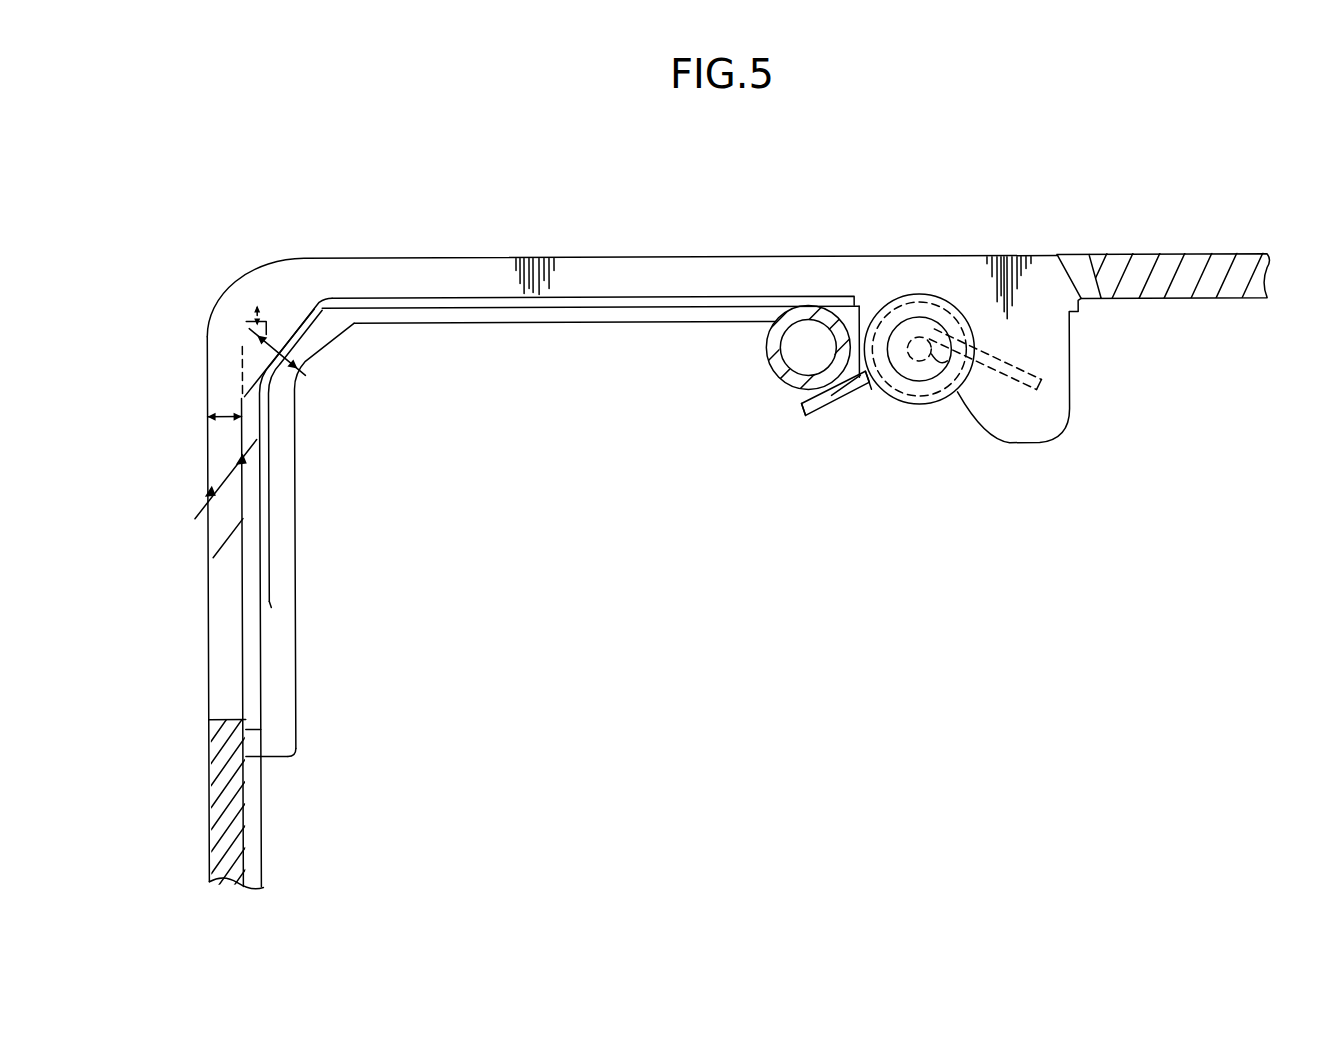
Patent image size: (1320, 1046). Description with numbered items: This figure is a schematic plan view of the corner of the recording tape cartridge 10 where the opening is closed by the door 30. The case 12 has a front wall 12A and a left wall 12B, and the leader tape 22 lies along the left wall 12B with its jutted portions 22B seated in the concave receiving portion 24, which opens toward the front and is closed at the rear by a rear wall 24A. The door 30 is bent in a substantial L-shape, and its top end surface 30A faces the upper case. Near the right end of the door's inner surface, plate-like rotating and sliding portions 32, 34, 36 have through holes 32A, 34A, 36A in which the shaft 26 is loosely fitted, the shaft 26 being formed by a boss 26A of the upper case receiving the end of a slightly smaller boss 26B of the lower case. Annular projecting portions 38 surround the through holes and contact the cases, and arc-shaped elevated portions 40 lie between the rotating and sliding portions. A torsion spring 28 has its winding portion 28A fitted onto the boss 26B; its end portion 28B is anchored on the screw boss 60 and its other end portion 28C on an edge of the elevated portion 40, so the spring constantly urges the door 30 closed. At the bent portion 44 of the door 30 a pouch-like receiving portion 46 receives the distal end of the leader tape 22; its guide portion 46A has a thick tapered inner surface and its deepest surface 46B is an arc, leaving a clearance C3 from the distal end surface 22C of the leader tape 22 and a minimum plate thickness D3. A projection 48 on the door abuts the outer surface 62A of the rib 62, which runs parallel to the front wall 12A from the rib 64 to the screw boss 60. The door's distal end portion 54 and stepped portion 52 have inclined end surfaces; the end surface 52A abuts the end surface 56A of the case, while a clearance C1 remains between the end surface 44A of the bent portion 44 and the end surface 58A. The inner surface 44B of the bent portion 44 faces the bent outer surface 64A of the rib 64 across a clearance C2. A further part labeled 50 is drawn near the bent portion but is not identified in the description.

The recording tape cartridge 10 is at (1160, 174).
The case 12 is at (1180, 235).
The front wall 12A is at (1150, 256).
The left wall 12B is at (208, 797).
The leader tape 22 is at (263, 608).
The jutted portions 22B is at (260, 663).
The distal end surface 22C is at (248, 330).
The concave receiving portion 24 is at (271, 600).
The rear wall 24A is at (270, 755).
The shaft 26 is at (979, 300).
The cylindrical boss 26A is at (979, 300).
The cylindrical boss 26B is at (920, 335).
The torsion spring 28 is at (833, 410).
The winding portion 28A is at (910, 417).
The end portion 28B is at (805, 422).
The other end portion 28C is at (1042, 386).
The door 30 is at (626, 258).
The top end surface 30A is at (703, 277).
The rotating and sliding portion 32 is at (1036, 400).
The rotating and sliding portion 34 is at (1036, 400).
The rotating and sliding portion 36 is at (965, 435).
The through hole 32A is at (1108, 405).
The through hole 34A is at (1108, 405).
The through hole 36A is at (937, 357).
The annular projecting portion 38 is at (928, 413).
The elevated portion 40 is at (878, 318).
The bent portion 44 is at (237, 277).
The end surface 44A is at (205, 415).
The inner surface 44B is at (316, 303).
The receiving portion 46 is at (264, 397).
The guide portion 46A is at (247, 345).
The deepest surface 46B is at (283, 320).
The projection 48 is at (372, 300).
The outer curved surface 50 is at (227, 317).
The stepped portion 52 is at (217, 518).
The end surface 52A is at (213, 556).
The distal end portion 54 is at (235, 708).
The end surface 56A is at (244, 517).
The end surface 58A is at (235, 480).
The screw boss 60 is at (768, 372).
The rib 62 is at (565, 322).
The outer surface 62A is at (447, 302).
The rib 64 is at (287, 442).
The outer surface 64A is at (327, 337).
The clearance C1 is at (225, 492).
The clearance C2 is at (305, 372).
The clearance C3 is at (232, 250).
The plate thickness D3 is at (213, 412).